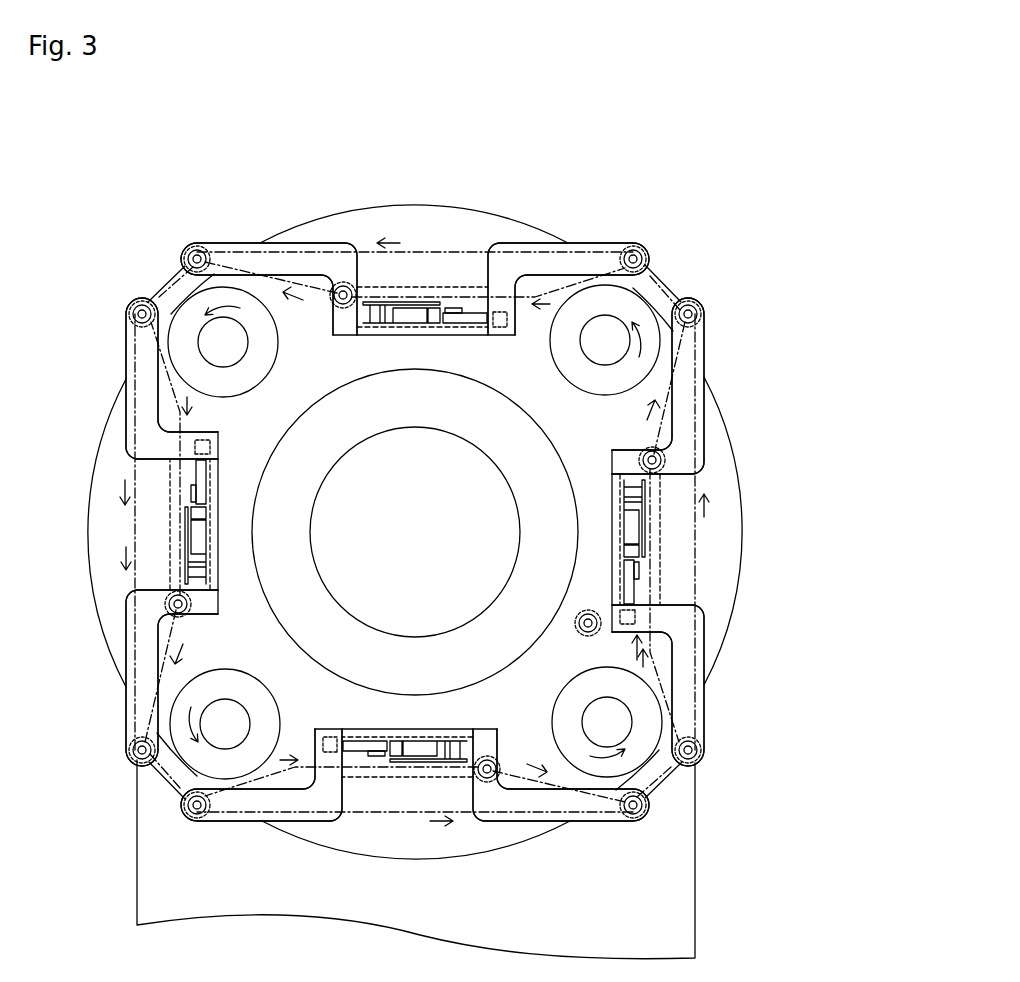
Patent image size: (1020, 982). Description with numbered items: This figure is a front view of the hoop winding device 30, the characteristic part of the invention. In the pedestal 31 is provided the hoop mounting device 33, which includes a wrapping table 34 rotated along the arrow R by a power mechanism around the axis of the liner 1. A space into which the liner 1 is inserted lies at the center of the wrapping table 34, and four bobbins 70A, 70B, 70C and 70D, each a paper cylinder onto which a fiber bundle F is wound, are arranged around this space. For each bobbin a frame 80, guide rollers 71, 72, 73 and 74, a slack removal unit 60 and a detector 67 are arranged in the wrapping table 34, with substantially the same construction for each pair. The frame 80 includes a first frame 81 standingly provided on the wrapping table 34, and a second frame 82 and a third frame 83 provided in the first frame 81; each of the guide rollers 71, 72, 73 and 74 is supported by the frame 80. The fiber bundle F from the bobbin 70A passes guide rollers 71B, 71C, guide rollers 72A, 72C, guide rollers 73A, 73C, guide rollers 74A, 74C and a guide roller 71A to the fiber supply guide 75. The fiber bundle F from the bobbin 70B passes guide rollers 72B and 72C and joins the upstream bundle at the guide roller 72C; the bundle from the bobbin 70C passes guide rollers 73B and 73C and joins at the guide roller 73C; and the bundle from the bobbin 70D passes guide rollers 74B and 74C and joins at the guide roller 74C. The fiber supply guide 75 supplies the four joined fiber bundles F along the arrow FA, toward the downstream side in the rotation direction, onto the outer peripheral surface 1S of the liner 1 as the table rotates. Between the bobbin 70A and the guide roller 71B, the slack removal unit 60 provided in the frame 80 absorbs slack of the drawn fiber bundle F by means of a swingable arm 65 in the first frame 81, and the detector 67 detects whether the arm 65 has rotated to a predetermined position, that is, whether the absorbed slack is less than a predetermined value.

The liner 1 is at (432, 547).
The outer peripheral surface 1S is at (418, 427).
The hoop winding device 30 is at (447, 80).
The pedestal 31 is at (292, 918).
The hoop mounting device 33 is at (415, 120).
The wrapping table 34 is at (533, 227).
The slack removal unit 60 is at (414, 537).
The arm 65 is at (478, 313).
The detector 67 is at (455, 308).
The bobbin 70A is at (561, 712).
The bobbin 70B is at (560, 356).
The bobbin 70C is at (270, 356).
The bobbin 70D is at (272, 712).
The guide roller 71 is at (718, 433).
The guide roller 71A is at (703, 751).
The guide roller 71B is at (665, 470).
The guide roller 71C is at (705, 316).
The guide roller 72 is at (323, 230).
The guide roller 72A is at (636, 246).
The guide roller 72B is at (355, 292).
The guide roller 72C is at (197, 245).
The guide roller 73 is at (116, 624).
The guide roller 73A is at (128, 314).
The guide roller 73B is at (168, 596).
The guide roller 73C is at (128, 748).
The guide roller 74 is at (498, 835).
The guide roller 74A is at (197, 818).
The guide roller 74B is at (478, 778).
The guide roller 74C is at (634, 820).
The fiber supply guide 75 is at (586, 637).
The frame 80 is at (422, 535).
The first frame 81 is at (410, 336).
The second frame 82 is at (600, 243).
The third frame 83 is at (240, 243).
The arrow R is at (383, 150).
The fiber bundle F is at (522, 622).
The arrow FA is at (577, 619).